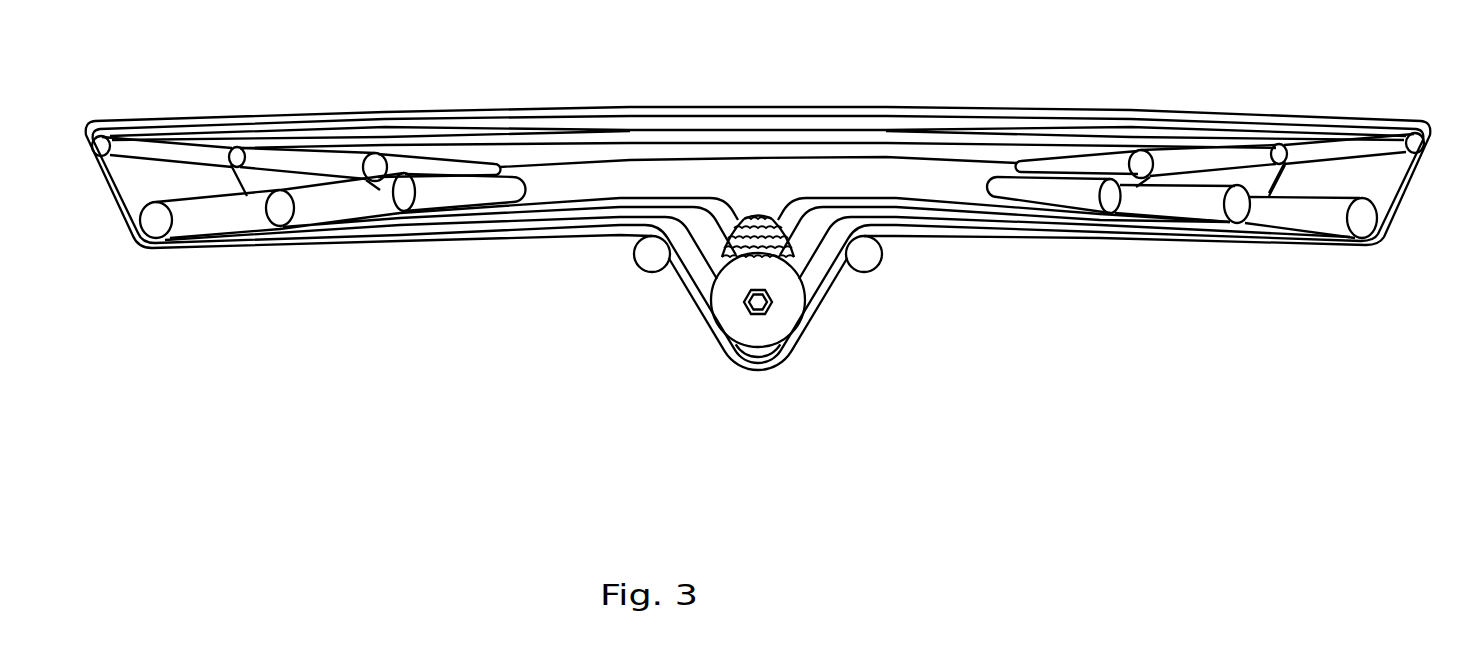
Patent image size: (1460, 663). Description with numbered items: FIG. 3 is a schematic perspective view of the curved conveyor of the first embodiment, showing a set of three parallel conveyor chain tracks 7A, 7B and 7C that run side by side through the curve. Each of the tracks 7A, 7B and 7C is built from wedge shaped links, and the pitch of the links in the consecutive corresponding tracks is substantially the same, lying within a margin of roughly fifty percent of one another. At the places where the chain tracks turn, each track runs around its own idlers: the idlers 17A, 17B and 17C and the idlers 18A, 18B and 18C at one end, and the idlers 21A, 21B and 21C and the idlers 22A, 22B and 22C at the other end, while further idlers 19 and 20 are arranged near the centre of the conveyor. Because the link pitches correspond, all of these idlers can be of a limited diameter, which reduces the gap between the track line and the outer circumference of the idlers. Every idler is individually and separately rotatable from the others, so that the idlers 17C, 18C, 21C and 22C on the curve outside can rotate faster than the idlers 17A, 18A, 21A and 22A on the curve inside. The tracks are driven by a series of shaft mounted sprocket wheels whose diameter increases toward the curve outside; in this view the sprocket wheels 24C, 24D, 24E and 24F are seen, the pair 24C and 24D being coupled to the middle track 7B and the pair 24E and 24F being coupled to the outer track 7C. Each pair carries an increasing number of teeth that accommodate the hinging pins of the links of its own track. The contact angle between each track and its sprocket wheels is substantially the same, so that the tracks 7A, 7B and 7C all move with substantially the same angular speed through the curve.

The conveyor chain track 7A is at (878, 202).
The conveyor chain track 7B is at (930, 138).
The conveyor chain track 7C is at (994, 236).
The idler 17A is at (407, 196).
The idler 17B is at (283, 212).
The idler 17C is at (155, 222).
The idler 18A is at (373, 158).
The idler 18B is at (237, 150).
The idler 18C is at (104, 140).
The idler 19 is at (650, 256).
The idler 20 is at (865, 256).
The idler 21A is at (1142, 156).
The idler 21B is at (1278, 148).
The idler 21C is at (1418, 138).
The idler 22A is at (1110, 198).
The idler 22B is at (1236, 208).
The idler 22C is at (1362, 222).
The sprocket wheel 24C is at (781, 232).
The sprocket wheel 24D is at (760, 215).
The sprocket wheel 24E is at (749, 222).
The sprocket wheel 24F is at (797, 310).